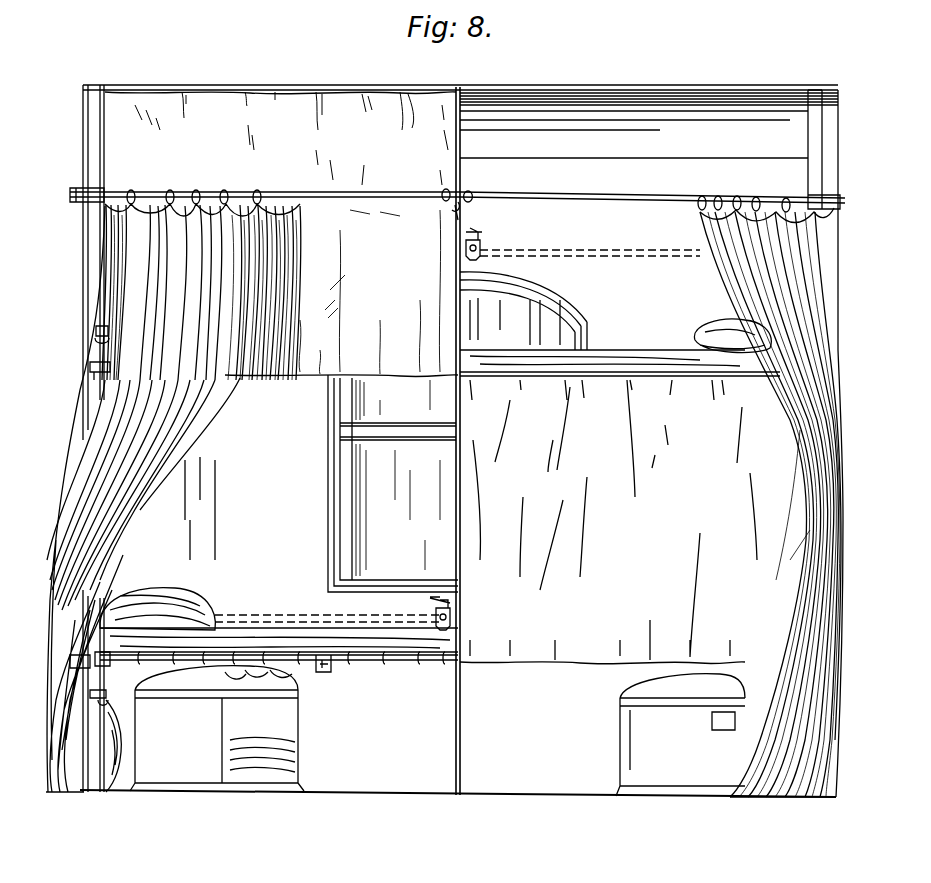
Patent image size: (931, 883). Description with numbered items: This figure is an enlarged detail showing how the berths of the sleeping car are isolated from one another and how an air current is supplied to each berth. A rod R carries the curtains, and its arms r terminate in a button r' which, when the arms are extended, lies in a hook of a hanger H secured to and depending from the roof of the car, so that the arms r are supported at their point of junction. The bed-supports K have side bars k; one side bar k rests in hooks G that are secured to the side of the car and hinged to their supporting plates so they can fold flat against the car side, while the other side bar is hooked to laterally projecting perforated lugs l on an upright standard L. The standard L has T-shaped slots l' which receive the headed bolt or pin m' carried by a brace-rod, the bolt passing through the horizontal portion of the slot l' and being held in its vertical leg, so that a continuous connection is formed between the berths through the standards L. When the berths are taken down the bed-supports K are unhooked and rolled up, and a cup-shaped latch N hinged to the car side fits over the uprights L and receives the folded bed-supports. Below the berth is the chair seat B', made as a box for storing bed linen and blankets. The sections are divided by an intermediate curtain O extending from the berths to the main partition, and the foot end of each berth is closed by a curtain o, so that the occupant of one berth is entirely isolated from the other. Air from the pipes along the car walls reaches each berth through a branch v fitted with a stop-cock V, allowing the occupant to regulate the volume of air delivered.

The hanger H is at (649, 125).
The rod R is at (455, 149).
The arm of rod r is at (462, 188).
The button r' is at (457, 185).
The side bar of bed-support k is at (452, 207).
The bed-support K is at (279, 668).
The hook G is at (323, 673).
The stop-cock V is at (452, 604).
The branch pipe v is at (480, 252).
The curtain o is at (444, 444).
The intermediate partition or curtain O is at (462, 490).
The standard L is at (94, 438).
The perforated lug l is at (84, 515).
The T-shaped slot l' is at (83, 509).
The headed bolt m' is at (90, 521).
The cup-shaped latch N is at (102, 706).
The seat B' is at (437, 731).